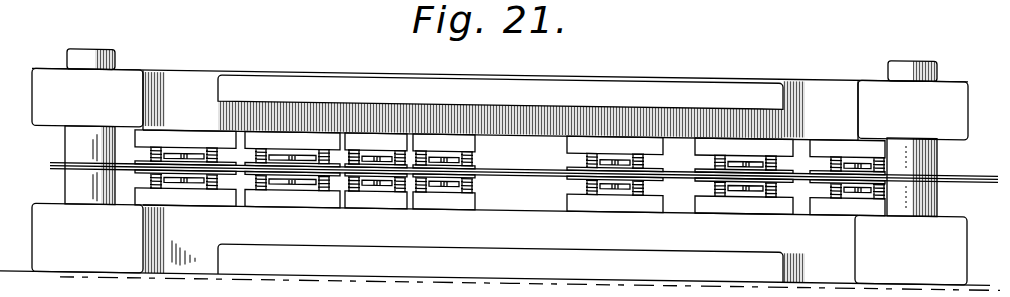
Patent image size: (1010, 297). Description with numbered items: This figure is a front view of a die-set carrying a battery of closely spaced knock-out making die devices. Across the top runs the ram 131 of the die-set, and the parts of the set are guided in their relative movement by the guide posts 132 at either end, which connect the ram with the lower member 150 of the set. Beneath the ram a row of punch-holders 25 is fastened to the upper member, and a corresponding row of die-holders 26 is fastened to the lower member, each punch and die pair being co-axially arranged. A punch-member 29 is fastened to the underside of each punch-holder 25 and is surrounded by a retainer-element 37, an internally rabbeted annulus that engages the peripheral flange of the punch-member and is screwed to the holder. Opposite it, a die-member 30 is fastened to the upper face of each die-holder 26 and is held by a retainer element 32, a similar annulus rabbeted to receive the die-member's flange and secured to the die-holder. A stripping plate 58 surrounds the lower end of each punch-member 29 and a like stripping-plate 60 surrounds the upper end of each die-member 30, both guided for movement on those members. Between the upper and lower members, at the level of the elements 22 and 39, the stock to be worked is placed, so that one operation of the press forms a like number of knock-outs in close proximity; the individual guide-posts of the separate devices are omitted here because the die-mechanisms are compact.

The shaft 22 is at (52, 165).
The punch-holder 25 is at (197, 138).
The die-holder 26 is at (191, 198).
The punch-member 29 is at (302, 160).
The die-member 30 is at (297, 178).
The retainer element 32 is at (308, 184).
The retainer-element 37 is at (286, 160).
The central rod 39 is at (523, 169).
The stripping plate 58 is at (178, 163).
The stripping-plate 60 is at (178, 173).
The ram 131 is at (500, 92).
The guide posts 132 is at (83, 194).
The lower frame plate 150 is at (540, 234).